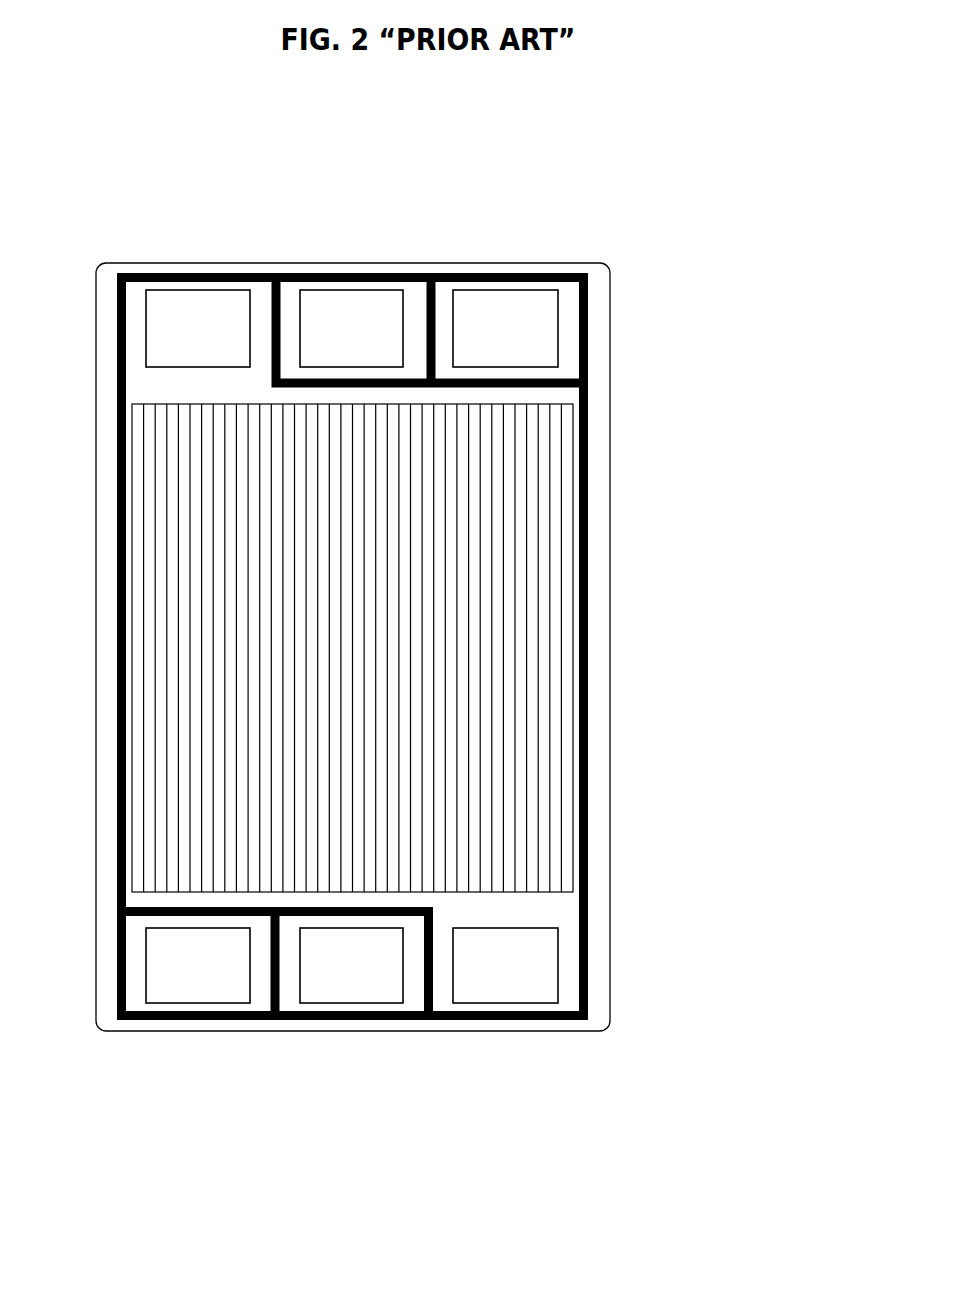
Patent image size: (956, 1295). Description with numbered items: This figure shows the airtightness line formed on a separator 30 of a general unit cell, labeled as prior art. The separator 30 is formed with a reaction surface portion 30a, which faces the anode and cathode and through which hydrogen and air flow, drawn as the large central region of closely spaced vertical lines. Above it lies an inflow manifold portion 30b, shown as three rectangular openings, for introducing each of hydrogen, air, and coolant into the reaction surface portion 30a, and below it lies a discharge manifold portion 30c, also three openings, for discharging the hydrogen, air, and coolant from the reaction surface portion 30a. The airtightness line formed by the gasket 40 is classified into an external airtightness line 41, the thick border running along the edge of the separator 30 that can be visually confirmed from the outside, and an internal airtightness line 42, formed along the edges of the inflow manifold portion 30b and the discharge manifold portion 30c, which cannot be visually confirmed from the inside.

The separator 30 is at (608, 262).
The reaction surface portion 30a is at (537, 725).
The inflow manifold portion 30b is at (484, 305).
The discharge manifold portion 30c is at (484, 985).
The gasket 40 is at (447, 646).
The external airtightness line 41 is at (588, 512).
The internal airtightness line 42 is at (278, 358).